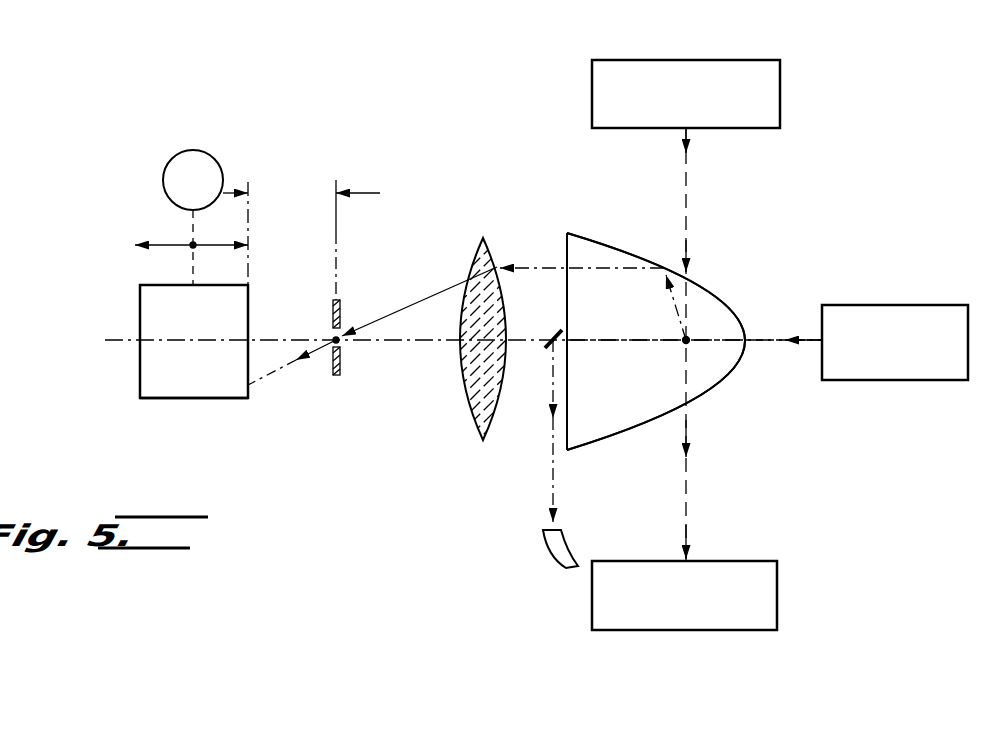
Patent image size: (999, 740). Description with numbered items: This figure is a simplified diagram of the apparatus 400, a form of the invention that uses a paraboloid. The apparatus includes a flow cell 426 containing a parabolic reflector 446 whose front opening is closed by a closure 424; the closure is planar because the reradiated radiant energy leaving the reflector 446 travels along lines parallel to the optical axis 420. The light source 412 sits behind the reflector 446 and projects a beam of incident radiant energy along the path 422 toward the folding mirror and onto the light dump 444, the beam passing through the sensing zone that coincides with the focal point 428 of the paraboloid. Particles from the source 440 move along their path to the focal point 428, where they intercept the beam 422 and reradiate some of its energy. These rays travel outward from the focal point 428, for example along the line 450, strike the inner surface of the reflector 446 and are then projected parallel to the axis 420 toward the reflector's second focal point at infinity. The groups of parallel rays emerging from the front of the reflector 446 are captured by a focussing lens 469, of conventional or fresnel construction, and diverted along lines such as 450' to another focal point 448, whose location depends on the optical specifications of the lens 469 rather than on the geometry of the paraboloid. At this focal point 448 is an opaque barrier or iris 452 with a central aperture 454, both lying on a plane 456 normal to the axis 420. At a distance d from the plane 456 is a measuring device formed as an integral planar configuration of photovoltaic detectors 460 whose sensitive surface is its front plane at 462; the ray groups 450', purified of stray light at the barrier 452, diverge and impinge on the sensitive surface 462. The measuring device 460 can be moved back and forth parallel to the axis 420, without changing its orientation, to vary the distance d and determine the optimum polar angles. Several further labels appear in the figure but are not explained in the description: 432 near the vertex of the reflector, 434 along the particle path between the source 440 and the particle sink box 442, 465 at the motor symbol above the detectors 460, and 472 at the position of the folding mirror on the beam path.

The apparatus 400 is at (592, 170).
The light source 412 is at (890, 305).
The optical axis 420 is at (445, 343).
The path of incident beam 422 is at (595, 342).
The closure 424 is at (567, 255).
The flow cell 426 is at (728, 268).
The focal point of paraboloid 428 is at (700, 345).
The vertex aperture of mirror 432 is at (745, 340).
The particle stream 434 is at (690, 185).
The particle source 440 is at (782, 103).
The particle sink 442 is at (725, 561).
The light dump 444 is at (553, 558).
The parabolic reflector 446 is at (663, 268).
The focal point 448 is at (340, 345).
The ray line 450 is at (641, 307).
The ray groups 450' is at (419, 290).
The opaque barrier or iris 452 is at (340, 323).
The central aperture 454 is at (333, 337).
The plane 456 is at (338, 225).
The photovoltaic detectors 460 is at (140, 312).
The sensitive surface 462 is at (210, 398).
The motor 465 is at (203, 152).
The focussing lens 469 is at (468, 410).
The beam splitter 472 is at (550, 335).